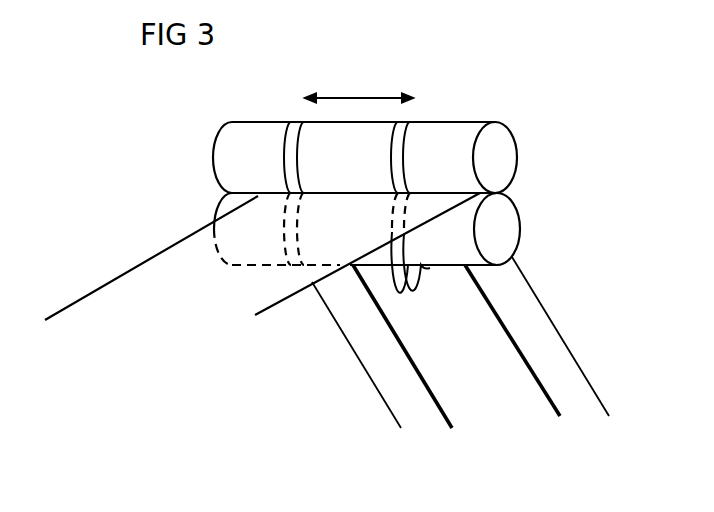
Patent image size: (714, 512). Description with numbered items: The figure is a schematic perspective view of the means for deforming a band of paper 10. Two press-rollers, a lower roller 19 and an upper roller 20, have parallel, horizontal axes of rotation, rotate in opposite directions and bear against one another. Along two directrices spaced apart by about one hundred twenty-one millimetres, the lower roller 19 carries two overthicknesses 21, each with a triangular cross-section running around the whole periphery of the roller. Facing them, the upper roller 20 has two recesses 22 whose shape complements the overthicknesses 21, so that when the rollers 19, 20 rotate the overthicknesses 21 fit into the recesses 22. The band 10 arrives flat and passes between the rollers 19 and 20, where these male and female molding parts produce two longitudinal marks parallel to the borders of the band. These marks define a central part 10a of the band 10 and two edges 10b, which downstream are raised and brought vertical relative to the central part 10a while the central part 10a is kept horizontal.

The band of paper 10 is at (582, 357).
The central part of the band 10a is at (430, 340).
The edges of the band 10b is at (528, 327).
The lower press-roller 19 is at (510, 230).
The upper press-roller 20 is at (507, 142).
The overthicknesses 21 is at (432, 270).
The recesses 22 is at (407, 122).